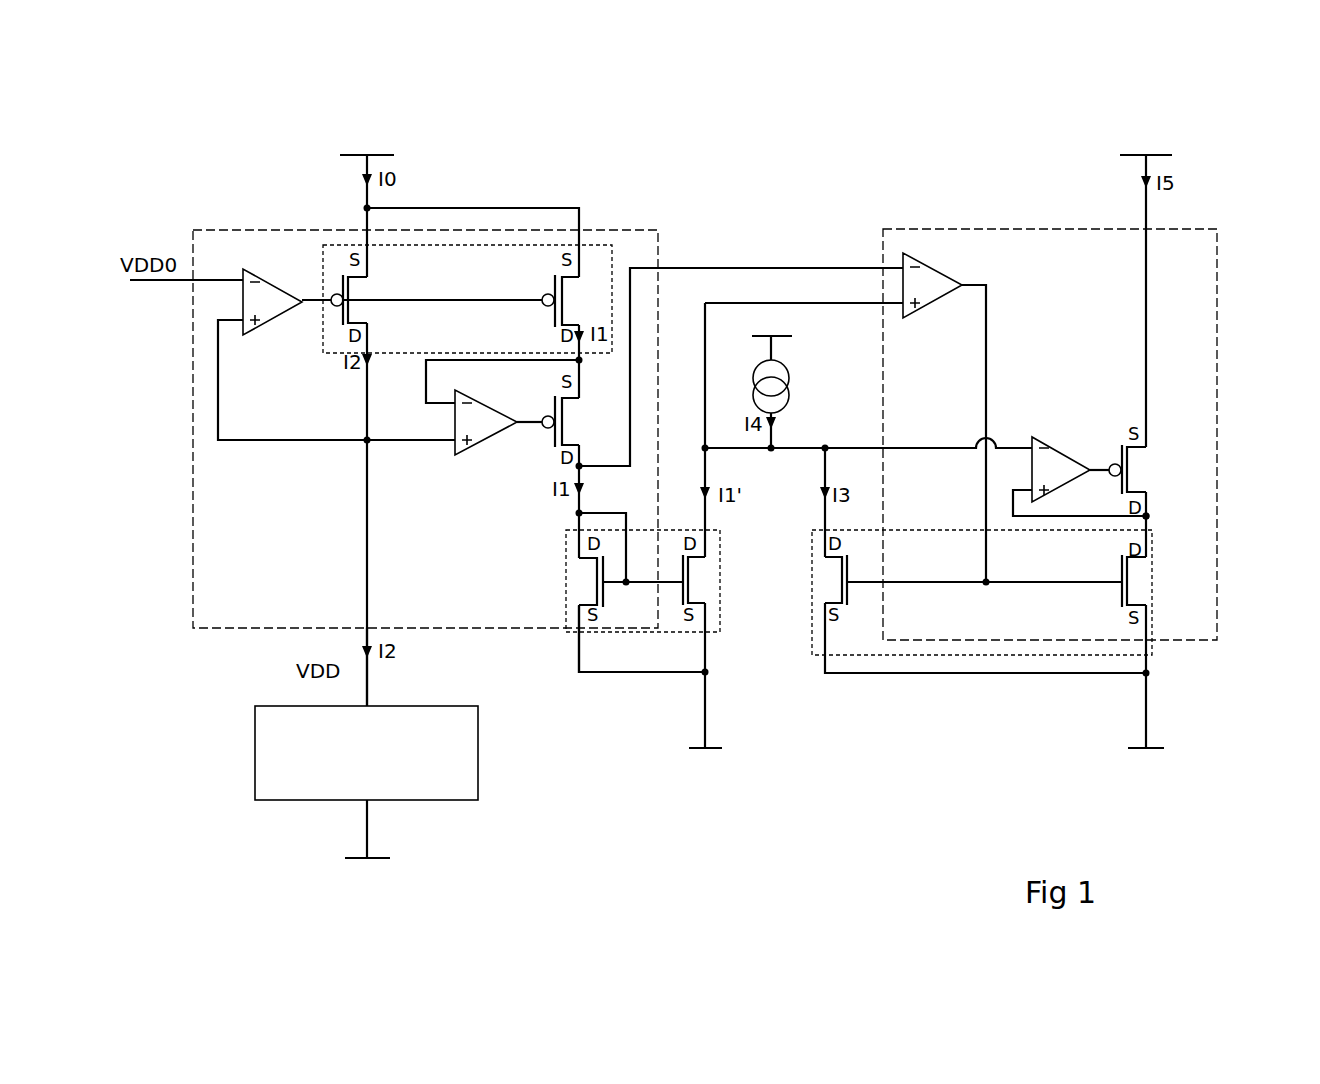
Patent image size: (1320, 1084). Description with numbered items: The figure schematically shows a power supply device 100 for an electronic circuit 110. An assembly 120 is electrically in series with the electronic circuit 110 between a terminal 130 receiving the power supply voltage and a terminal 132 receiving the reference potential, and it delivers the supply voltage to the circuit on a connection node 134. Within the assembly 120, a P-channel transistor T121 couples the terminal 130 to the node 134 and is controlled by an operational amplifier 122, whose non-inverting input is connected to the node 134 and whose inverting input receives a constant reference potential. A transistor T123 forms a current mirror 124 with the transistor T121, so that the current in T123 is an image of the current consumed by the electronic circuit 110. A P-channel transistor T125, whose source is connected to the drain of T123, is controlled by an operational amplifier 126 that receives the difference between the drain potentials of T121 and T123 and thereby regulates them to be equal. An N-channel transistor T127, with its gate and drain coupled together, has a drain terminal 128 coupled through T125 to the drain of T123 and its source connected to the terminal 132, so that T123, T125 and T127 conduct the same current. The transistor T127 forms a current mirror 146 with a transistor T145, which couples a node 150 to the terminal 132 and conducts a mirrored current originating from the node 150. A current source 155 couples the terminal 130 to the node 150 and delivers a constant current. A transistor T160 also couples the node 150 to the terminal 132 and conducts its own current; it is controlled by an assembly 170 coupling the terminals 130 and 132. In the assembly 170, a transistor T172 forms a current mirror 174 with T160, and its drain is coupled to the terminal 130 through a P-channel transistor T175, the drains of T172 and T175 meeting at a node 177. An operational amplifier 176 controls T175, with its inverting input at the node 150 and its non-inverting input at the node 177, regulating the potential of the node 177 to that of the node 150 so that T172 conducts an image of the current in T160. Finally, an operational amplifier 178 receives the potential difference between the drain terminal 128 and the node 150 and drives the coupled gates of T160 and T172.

The power supply device 100 is at (200, 168).
The electronic circuit 110 is at (468, 780).
The assembly 120 is at (598, 230).
The operational amplifier 122 is at (277, 303).
The current mirror 124 is at (532, 245).
The operational amplifier 126 is at (475, 445).
The drain terminal 128 is at (575, 510).
The terminal or node of application of power supply voltage VCC 130 is at (367, 163).
The terminal or node of application of reference potential GND 132 is at (360, 832).
The node 134 is at (367, 685).
The current mirror 146 is at (645, 635).
The node 150 is at (795, 448).
The current source 155 is at (752, 384).
The assembly 170 is at (1025, 229).
The current mirror 174 is at (945, 655).
The operational amplifier 176 is at (1065, 455).
The node 177 is at (1150, 516).
The operational amplifier 178 is at (940, 275).
The transistor T121 is at (352, 292).
The transistor T123 is at (567, 292).
The transistor T125 is at (550, 452).
The transistor T127 is at (592, 582).
The transistor T145 is at (692, 580).
The transistor T160 is at (826, 587).
The transistor T172 is at (1134, 585).
The transistor T175 is at (1134, 472).